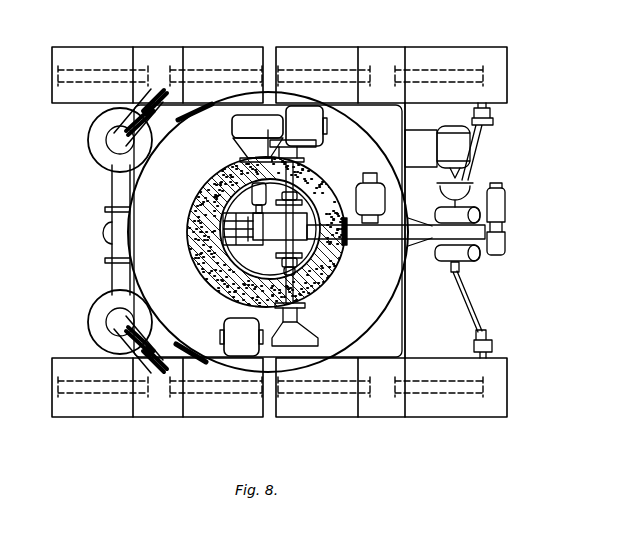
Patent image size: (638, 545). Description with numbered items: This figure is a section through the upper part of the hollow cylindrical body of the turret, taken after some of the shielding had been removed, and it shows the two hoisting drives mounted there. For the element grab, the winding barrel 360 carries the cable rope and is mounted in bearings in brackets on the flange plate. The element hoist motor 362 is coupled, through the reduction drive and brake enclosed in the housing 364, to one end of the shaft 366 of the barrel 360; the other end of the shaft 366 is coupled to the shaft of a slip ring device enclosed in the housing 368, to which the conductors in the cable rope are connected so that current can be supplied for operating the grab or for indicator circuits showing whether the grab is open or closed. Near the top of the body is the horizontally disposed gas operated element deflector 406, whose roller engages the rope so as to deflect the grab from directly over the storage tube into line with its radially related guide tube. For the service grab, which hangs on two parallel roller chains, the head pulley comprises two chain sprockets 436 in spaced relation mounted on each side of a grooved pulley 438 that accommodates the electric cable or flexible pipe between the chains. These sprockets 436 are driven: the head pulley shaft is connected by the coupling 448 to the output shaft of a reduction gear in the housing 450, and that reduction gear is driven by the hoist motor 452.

The winding barrel 360 is at (340, 270).
The element hoist motor 362 is at (243, 348).
The housing 364 is at (305, 340).
The shaft 366 is at (350, 261).
The housing 368 is at (318, 153).
The gas operated element deflector 406 is at (267, 225).
The chain sprockets 436 is at (238, 240).
The grooved pulley 438 is at (263, 243).
The coupling 448 is at (222, 212).
The housing 450 is at (250, 115).
The hoist motor 452 is at (303, 118).